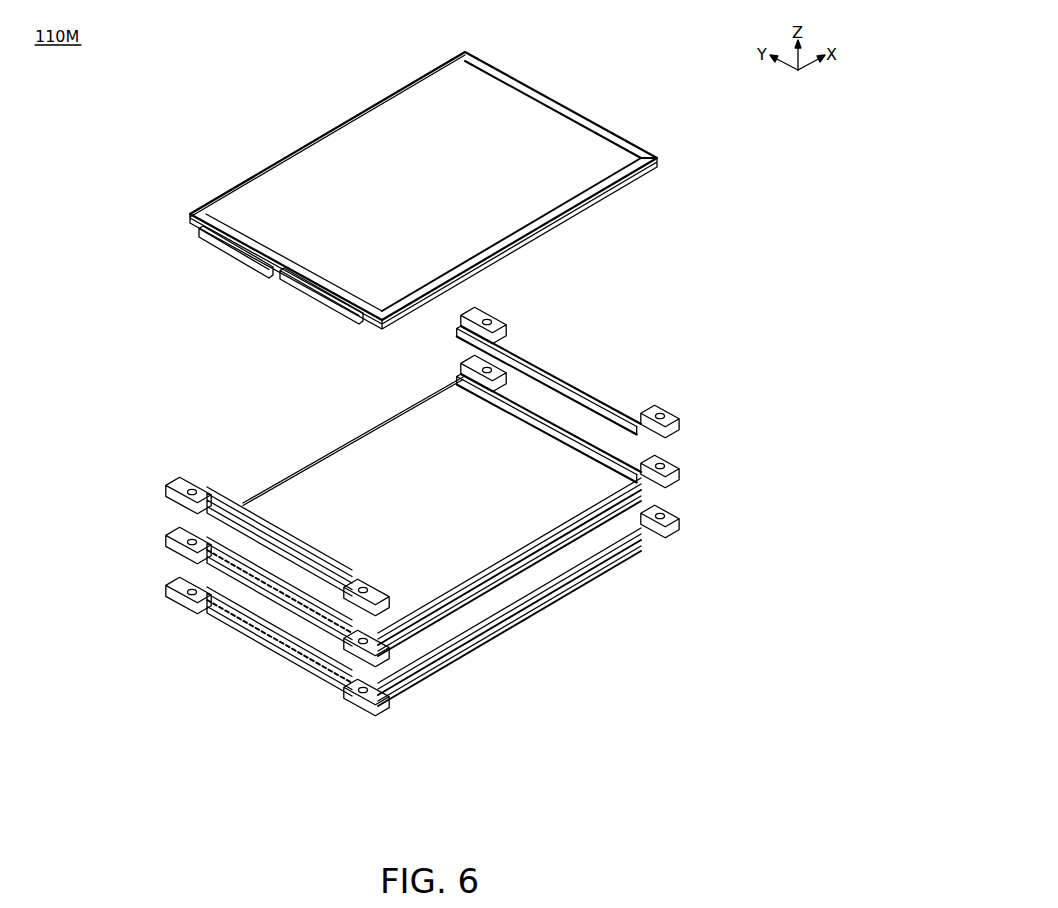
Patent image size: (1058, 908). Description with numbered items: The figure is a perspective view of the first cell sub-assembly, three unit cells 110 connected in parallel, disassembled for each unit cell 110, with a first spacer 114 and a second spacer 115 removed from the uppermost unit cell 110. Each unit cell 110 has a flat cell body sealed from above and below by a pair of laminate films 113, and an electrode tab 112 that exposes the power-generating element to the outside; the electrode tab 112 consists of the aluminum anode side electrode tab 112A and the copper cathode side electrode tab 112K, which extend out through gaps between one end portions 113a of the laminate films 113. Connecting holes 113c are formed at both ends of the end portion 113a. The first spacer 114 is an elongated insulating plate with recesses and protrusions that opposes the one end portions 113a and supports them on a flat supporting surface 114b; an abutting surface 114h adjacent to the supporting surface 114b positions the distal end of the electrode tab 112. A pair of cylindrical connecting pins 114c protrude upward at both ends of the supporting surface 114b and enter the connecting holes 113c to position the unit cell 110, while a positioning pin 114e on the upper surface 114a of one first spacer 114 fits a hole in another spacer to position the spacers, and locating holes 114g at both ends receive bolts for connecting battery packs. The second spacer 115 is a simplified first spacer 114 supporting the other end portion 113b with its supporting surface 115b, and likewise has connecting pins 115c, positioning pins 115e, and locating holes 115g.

The unit cell 110 is at (345, 106).
The electrode tab 112 is at (236, 276).
The cathode side electrode tab 112K is at (240, 267).
The anode side electrode tab 112A is at (312, 300).
The laminate film 113 is at (305, 140).
The one end portion 113a is at (283, 262).
The other end portion 113b is at (552, 99).
The connecting hole 113c is at (477, 57).
The first spacer 114 is at (448, 660).
The upper surface 114a is at (175, 483).
The supporting surface 114b is at (227, 618).
The connecting pin 114c is at (208, 488).
The positioning pin 114e is at (165, 500).
The locating hole 114g is at (178, 540).
The abutting surface 114h is at (183, 609).
The second spacer 115 is at (680, 422).
The supporting surface 115b is at (563, 377).
The connecting pin 115c is at (461, 334).
The positioning pin 115e is at (508, 314).
The locating hole 115g is at (489, 310).